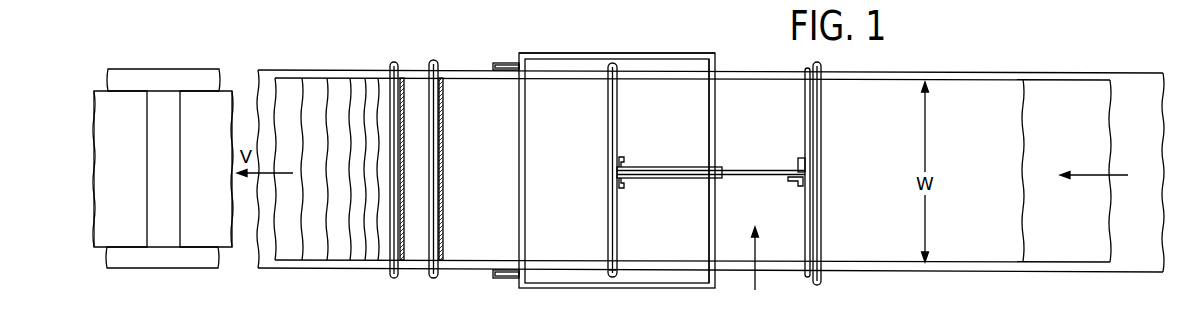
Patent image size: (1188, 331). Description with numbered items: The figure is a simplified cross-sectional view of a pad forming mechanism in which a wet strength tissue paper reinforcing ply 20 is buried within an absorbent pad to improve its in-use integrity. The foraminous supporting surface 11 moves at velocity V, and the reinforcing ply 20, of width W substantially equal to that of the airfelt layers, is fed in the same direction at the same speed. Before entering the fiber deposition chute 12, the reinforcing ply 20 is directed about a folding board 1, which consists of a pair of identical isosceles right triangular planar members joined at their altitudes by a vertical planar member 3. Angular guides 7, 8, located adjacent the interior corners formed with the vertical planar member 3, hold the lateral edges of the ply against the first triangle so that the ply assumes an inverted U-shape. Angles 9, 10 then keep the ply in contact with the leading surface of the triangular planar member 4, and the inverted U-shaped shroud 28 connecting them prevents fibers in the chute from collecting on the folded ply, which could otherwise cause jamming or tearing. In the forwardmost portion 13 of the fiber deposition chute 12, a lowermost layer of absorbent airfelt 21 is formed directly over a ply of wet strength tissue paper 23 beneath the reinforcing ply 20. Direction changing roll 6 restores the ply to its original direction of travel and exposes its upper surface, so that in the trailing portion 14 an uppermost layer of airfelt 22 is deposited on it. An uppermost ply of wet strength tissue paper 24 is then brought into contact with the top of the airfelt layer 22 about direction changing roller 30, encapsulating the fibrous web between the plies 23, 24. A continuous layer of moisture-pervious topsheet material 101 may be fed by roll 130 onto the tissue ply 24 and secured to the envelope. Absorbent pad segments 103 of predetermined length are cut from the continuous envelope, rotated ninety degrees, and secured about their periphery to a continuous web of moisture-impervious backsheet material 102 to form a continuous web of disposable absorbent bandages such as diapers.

The folding board 1 is at (754, 270).
The vertical planar member 3 is at (757, 170).
The triangular planar member 4 is at (618, 243).
The direction changing roll 6 is at (608, 277).
The angular guide 7 is at (798, 165).
The angular guide 8 is at (795, 185).
The angle 9 is at (627, 160).
The angle 10 is at (627, 188).
The foraminous supporting surface 11 is at (267, 263).
The fiber deposition chute 12 is at (575, 37).
The forwardmost portion of the fiber deposition chute 13 is at (687, 90).
The trailing portion of the fiber deposition chute 14 is at (540, 88).
The wet strength tissue paper reinforcing ply 20 is at (345, 83).
The lowermost layer of absorbent airfelt 21 is at (317, 82).
The uppermost layer of airfelt 22 is at (358, 257).
The ply of wet strength tissue paper 23 is at (292, 257).
The uppermost ply of wet strength tissue paper 24 is at (377, 88).
The inverted U-shaped shroud 28 is at (668, 167).
The direction changing roller 30 is at (431, 280).
The moisture-pervious topsheet material 101 is at (387, 92).
The moisture-impervious backsheet material 102 is at (167, 77).
The absorbent pad segments 103 is at (120, 240).
The roll 130 is at (397, 248).